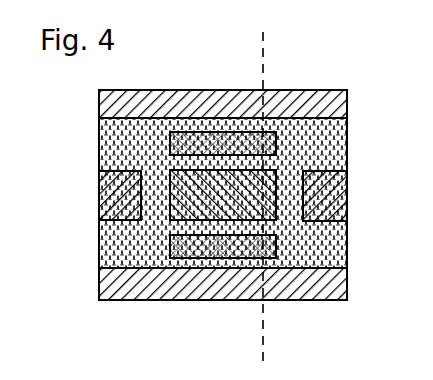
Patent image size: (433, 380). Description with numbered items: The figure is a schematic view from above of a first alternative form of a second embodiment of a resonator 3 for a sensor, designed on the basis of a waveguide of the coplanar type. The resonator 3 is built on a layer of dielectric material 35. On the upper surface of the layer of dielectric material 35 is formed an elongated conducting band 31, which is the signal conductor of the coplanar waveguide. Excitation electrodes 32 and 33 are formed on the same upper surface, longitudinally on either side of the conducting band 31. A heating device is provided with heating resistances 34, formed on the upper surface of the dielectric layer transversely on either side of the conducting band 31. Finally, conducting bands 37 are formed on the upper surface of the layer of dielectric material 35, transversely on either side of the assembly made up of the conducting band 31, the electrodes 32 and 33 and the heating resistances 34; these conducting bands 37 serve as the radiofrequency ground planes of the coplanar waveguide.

The resonator 3 is at (197, 80).
The elongated conducting band 31 is at (276, 198).
The excitation electrode 32 is at (99, 198).
The excitation electrode 33 is at (348, 194).
The heating resistances 34 is at (170, 143).
The layer of dielectric material 35 is at (336, 258).
The conducting bands 37 is at (348, 104).